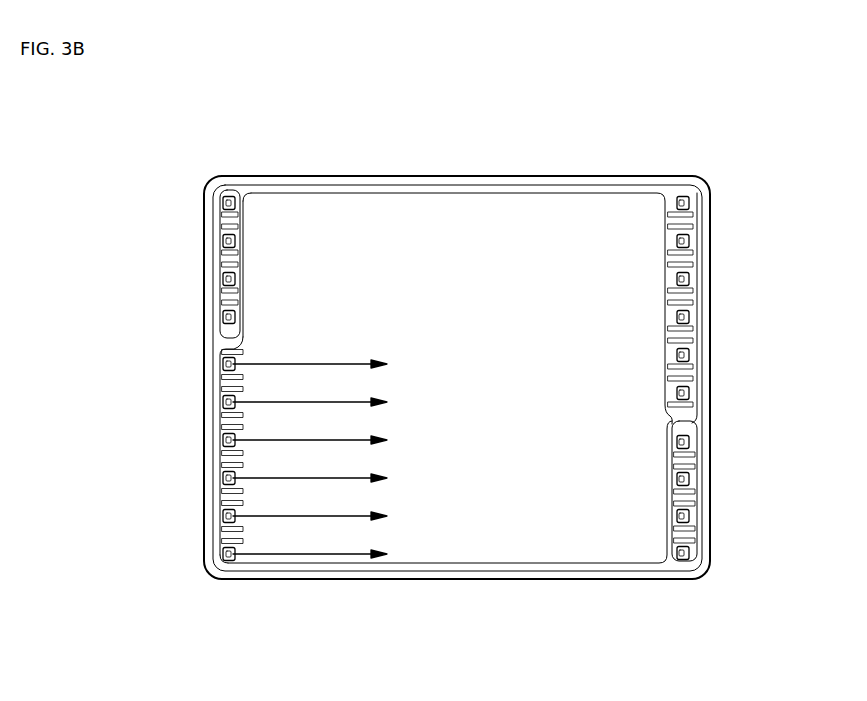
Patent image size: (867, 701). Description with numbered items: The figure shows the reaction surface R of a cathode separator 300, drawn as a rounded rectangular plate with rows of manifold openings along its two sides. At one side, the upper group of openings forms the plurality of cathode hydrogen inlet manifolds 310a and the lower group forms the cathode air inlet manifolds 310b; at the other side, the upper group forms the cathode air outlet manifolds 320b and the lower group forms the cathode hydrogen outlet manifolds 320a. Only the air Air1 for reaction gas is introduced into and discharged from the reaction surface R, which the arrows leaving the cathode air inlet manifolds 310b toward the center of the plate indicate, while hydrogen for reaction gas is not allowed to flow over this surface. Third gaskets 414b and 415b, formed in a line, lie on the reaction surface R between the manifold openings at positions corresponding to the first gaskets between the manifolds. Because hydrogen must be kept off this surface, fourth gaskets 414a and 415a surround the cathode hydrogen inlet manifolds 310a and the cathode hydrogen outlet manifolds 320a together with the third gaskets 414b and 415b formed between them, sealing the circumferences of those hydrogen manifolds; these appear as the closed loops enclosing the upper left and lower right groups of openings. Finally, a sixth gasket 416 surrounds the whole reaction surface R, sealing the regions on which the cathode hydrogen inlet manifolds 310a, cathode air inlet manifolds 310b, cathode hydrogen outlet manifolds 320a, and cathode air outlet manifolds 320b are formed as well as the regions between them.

The cathode separator 300 is at (529, 176).
The cathode hydrogen inlet manifolds 310a is at (226, 203).
The cathode air inlet manifolds 310b is at (226, 554).
The cathode hydrogen outlet manifolds 320a is at (688, 442).
The cathode air outlet manifolds 320b is at (688, 203).
The fourth gasket 414a is at (243, 262).
The third gasket 414b is at (243, 529).
The fourth gasket 415a is at (672, 488).
The third gasket 415b is at (672, 266).
The sixth gasket 416 is at (443, 193).
The air for reaction gas Air1 is at (333, 517).
The reaction surface R is at (469, 370).